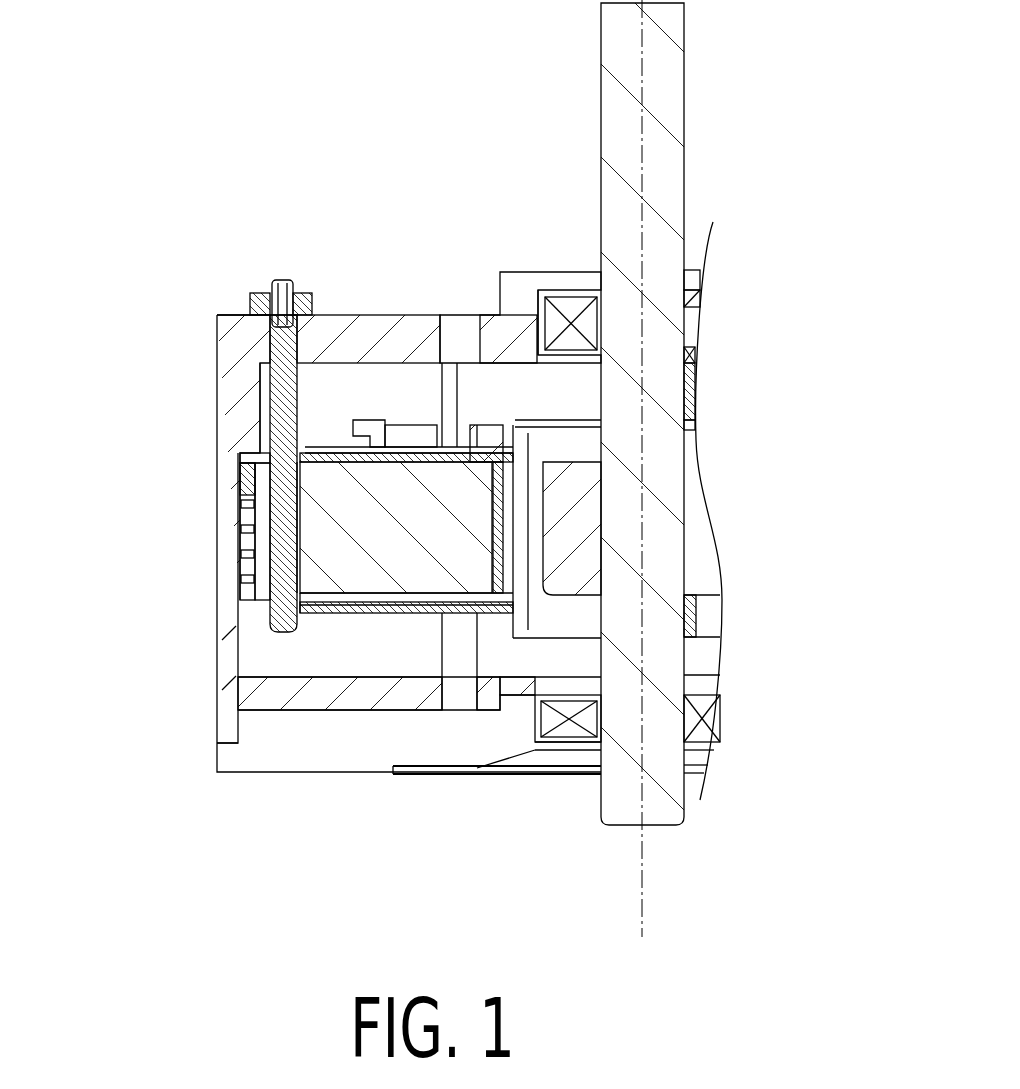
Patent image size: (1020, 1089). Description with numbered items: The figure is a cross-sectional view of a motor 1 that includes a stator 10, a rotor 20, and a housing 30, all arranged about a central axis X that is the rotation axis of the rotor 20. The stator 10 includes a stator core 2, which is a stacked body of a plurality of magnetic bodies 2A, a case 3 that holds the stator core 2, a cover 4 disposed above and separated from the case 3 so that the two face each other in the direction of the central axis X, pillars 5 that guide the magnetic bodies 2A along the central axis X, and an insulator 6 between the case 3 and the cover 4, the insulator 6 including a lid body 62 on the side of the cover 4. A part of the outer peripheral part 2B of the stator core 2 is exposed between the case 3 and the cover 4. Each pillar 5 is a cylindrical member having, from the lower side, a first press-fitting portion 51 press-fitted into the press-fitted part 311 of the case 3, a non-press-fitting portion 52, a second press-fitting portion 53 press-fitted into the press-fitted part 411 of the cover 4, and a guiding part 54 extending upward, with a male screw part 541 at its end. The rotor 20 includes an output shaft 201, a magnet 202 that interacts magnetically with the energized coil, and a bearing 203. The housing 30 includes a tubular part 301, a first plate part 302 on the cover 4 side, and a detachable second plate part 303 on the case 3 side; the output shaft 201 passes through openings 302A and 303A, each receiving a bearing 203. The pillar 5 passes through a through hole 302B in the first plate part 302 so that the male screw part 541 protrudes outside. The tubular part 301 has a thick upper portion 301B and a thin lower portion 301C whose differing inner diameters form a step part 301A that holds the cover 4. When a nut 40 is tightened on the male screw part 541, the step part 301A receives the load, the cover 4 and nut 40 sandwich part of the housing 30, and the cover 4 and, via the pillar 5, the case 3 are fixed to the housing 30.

The motor 1 is at (166, 175).
The stator core 2 is at (373, 493).
The magnetic bodies 2A is at (420, 615).
The outer peripheral part 2B is at (240, 553).
The case 3 is at (237, 600).
The cover 4 is at (240, 493).
The pillar 5 is at (260, 385).
The insulator 6 is at (450, 400).
The stator 10 is at (367, 632).
The rotor 20 is at (698, 157).
The housing 30 is at (392, 288).
The nut 40 is at (305, 292).
The first press-fitting portion 51 is at (230, 595).
The non-press-fitting portion 52 is at (242, 533).
The second press-fitting portion 53 is at (260, 437).
The guiding part 54 is at (273, 343).
The lid body 62 is at (382, 424).
The output shaft 201 is at (663, 95).
The magnet 202 is at (696, 556).
The bearing 203 is at (547, 307).
The tubular part 301 is at (230, 648).
The step part 301A is at (242, 482).
The upper portion 301B is at (240, 420).
The lower portion 301C is at (227, 652).
The first plate part 302 is at (490, 317).
The opening 302A is at (570, 290).
The through hole 302B is at (225, 318).
The second plate part 303 is at (320, 693).
The opening 303A is at (684, 690).
The press-fitted part 311 is at (287, 634).
The press-fitted part 411 is at (316, 380).
The male screw part 541 is at (267, 290).
The central axis X is at (641, 900).